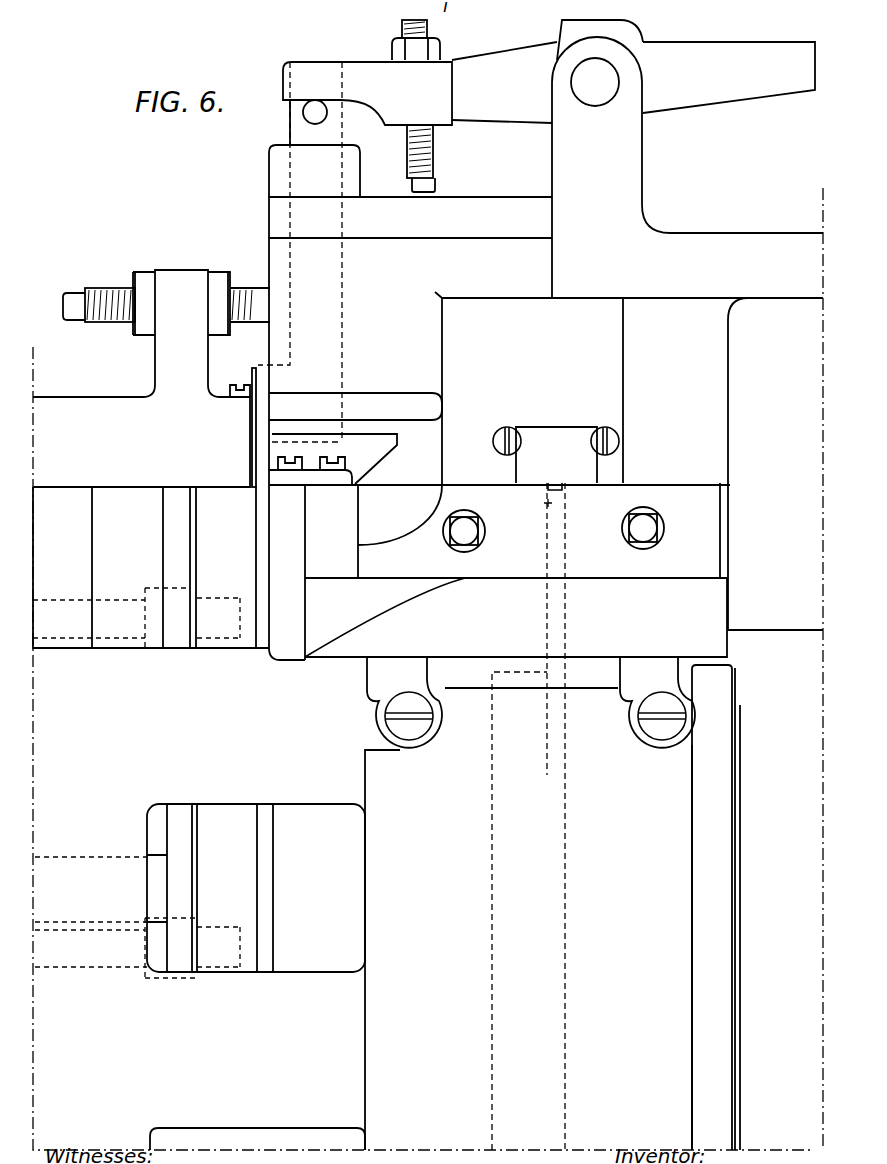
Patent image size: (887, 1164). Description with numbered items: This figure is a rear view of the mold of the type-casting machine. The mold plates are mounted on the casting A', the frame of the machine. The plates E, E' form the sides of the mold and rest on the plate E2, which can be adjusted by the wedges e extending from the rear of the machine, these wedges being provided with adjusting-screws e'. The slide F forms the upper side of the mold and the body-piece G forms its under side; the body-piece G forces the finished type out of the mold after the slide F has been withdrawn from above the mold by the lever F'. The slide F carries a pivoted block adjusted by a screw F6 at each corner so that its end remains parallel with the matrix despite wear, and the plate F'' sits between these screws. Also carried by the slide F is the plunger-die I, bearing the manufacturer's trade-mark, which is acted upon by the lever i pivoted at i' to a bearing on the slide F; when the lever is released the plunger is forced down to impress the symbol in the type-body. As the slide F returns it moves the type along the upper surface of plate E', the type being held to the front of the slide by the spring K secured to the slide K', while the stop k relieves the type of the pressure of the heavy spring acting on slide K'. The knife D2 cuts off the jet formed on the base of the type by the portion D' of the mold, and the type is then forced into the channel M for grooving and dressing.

The lever i is at (549, 106).
The plunger-die I is at (296, 128).
The pivot i' is at (687, 159).
The stop k is at (166, 299).
The slide K' is at (141, 378).
The spring K is at (235, 427).
The slide F is at (499, 422).
The lever F' is at (592, 388).
The screw F6 is at (552, 432).
The plate F'' is at (556, 455).
The knife D2 is at (345, 452).
The portion of the mold D' is at (541, 816).
The body-piece G is at (544, 503).
The channel M is at (262, 527).
The plate E is at (516, 571).
The plate E' is at (480, 534).
The plate E2 is at (516, 617).
The wedge e is at (531, 702).
The adjusting-screw e' is at (535, 716).
The casting A' is at (428, 669).